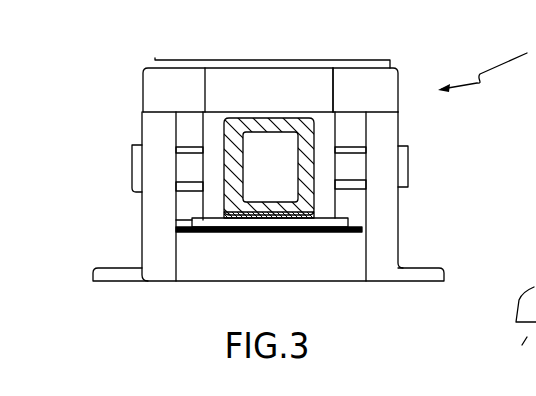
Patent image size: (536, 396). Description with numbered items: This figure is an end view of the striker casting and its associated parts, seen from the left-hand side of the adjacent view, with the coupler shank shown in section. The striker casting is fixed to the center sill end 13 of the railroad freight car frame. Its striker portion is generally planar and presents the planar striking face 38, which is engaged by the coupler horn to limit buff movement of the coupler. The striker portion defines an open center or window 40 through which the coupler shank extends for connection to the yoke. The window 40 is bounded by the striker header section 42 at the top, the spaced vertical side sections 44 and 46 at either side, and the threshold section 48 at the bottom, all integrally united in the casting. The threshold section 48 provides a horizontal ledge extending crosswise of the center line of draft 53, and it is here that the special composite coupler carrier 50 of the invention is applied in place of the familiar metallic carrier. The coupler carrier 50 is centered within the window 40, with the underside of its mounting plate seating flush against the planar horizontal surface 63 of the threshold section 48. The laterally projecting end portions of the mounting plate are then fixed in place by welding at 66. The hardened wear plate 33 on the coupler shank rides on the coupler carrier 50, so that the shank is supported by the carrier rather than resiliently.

The center sill end 13 is at (129, 121).
The planar striking face 38 is at (270, 72).
The striker header section 42 is at (317, 78).
The center line of draft 53 is at (272, 168).
The window 40 is at (366, 172).
The vertical side section 44 is at (158, 202).
The vertical side section 46 is at (395, 208).
The threshold section 48 is at (350, 268).
The composite coupler carrier 50 is at (232, 235).
The planar horizontal surface 63 is at (320, 227).
The weld 66 is at (155, 250).
The wear plate 33 is at (515, 331).